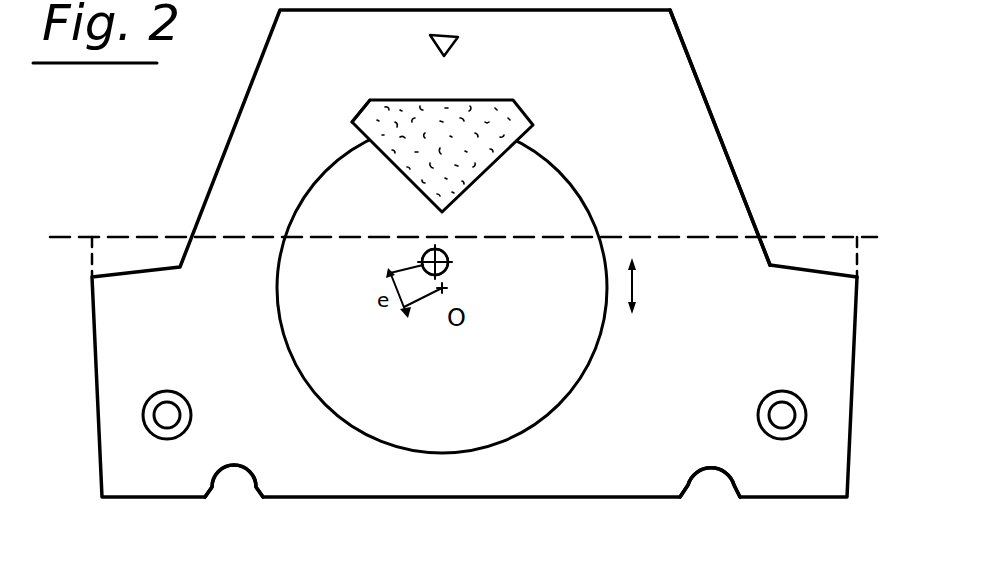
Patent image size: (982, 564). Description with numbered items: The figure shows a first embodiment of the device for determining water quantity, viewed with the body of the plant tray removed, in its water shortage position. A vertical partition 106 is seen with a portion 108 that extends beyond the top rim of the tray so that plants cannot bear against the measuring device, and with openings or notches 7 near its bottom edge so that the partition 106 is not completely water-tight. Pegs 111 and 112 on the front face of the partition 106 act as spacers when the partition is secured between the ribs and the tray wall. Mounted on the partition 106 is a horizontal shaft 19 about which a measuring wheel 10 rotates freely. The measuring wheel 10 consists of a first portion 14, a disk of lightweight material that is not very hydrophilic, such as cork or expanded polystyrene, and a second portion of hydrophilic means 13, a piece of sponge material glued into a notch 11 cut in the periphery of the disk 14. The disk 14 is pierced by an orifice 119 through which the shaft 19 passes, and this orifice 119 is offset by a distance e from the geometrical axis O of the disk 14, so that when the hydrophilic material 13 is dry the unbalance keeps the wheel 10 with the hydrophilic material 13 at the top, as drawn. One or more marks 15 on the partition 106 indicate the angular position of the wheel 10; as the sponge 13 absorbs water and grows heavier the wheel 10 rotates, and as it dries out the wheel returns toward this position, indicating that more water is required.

The notches 7 is at (230, 483).
The measuring wheel 10 is at (246, 343).
The notch 11 is at (398, 167).
The hydrophilic means 13 is at (373, 115).
The first portion 14 is at (577, 330).
The marks 15 is at (447, 47).
The horizontal shaft 19 is at (445, 252).
The partition 106 is at (787, 282).
The portion 108 is at (690, 121).
The peg 111 is at (780, 422).
The peg 112 is at (158, 435).
The orifice 119 is at (447, 267).